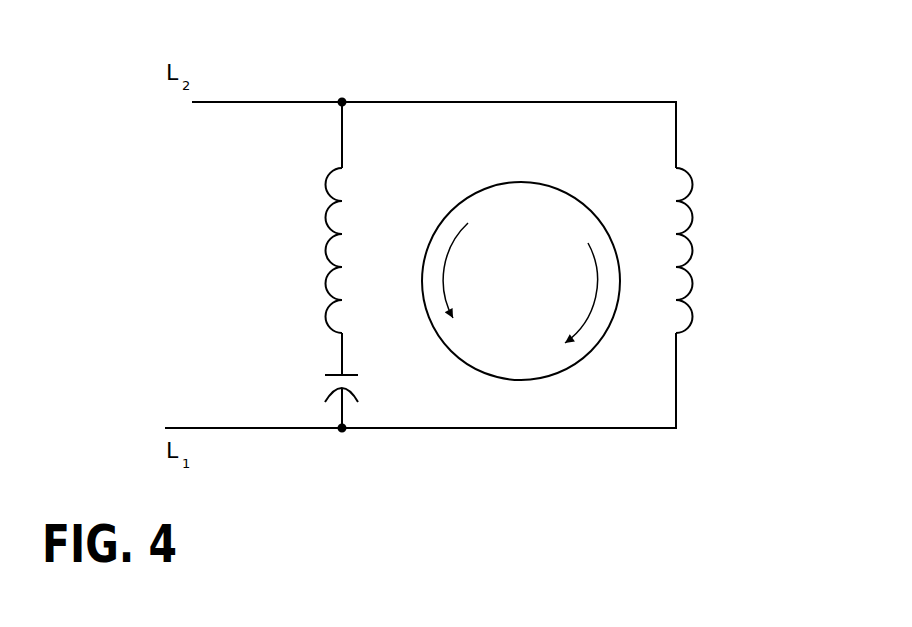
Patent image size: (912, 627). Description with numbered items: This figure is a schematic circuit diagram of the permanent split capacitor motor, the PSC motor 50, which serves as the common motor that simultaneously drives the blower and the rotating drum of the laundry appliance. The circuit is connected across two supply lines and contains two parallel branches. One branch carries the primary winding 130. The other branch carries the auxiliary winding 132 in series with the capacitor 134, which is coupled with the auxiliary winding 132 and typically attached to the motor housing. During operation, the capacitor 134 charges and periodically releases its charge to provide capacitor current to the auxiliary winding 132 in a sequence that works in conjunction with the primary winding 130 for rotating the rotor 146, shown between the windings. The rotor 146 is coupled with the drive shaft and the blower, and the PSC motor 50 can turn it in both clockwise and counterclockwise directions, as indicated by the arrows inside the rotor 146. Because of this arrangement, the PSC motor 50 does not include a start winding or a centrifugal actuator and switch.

The PSC motor 50 is at (383, 62).
The primary winding 130 is at (702, 220).
The auxiliary winding 132 is at (322, 227).
The capacitor 134 is at (323, 385).
The rotor 146 is at (550, 180).